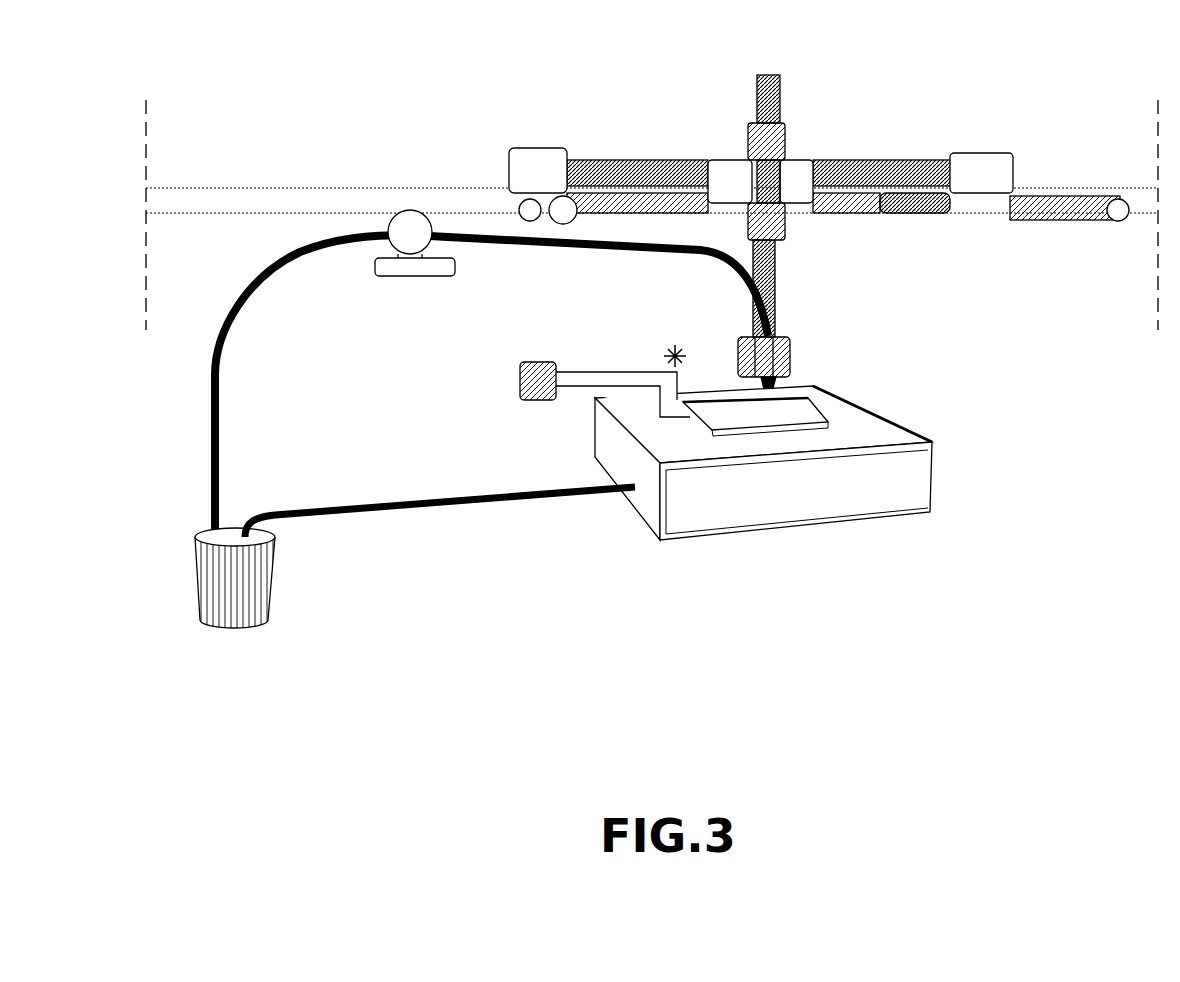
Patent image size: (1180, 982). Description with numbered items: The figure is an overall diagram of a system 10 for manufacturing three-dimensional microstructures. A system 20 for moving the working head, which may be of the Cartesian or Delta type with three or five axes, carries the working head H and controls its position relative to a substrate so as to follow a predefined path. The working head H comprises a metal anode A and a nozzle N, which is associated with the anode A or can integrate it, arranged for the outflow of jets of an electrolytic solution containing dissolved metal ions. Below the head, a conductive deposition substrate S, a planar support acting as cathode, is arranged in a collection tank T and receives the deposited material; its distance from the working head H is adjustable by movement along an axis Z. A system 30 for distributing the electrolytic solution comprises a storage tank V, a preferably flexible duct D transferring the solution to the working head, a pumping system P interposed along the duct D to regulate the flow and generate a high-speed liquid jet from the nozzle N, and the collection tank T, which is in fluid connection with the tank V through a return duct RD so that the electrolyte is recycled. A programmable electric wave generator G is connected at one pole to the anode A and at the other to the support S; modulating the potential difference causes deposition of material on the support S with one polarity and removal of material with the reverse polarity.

The system for manufacturing three-dimensional microstructures 10 is at (298, 104).
The system for moving the working head 20 is at (808, 227).
The system for distributing electrolytic solution 30 is at (258, 366).
The duct D is at (242, 293).
The pumping system P is at (413, 278).
The anode A is at (733, 397).
The axis Z is at (802, 258).
The working head H is at (787, 363).
The nozzle N is at (790, 398).
The conductive deposition substrate S is at (820, 410).
The collection tank T is at (895, 435).
The programmable electric wave generator G is at (533, 387).
The storage tank V is at (282, 567).
The return duct RD is at (462, 510).